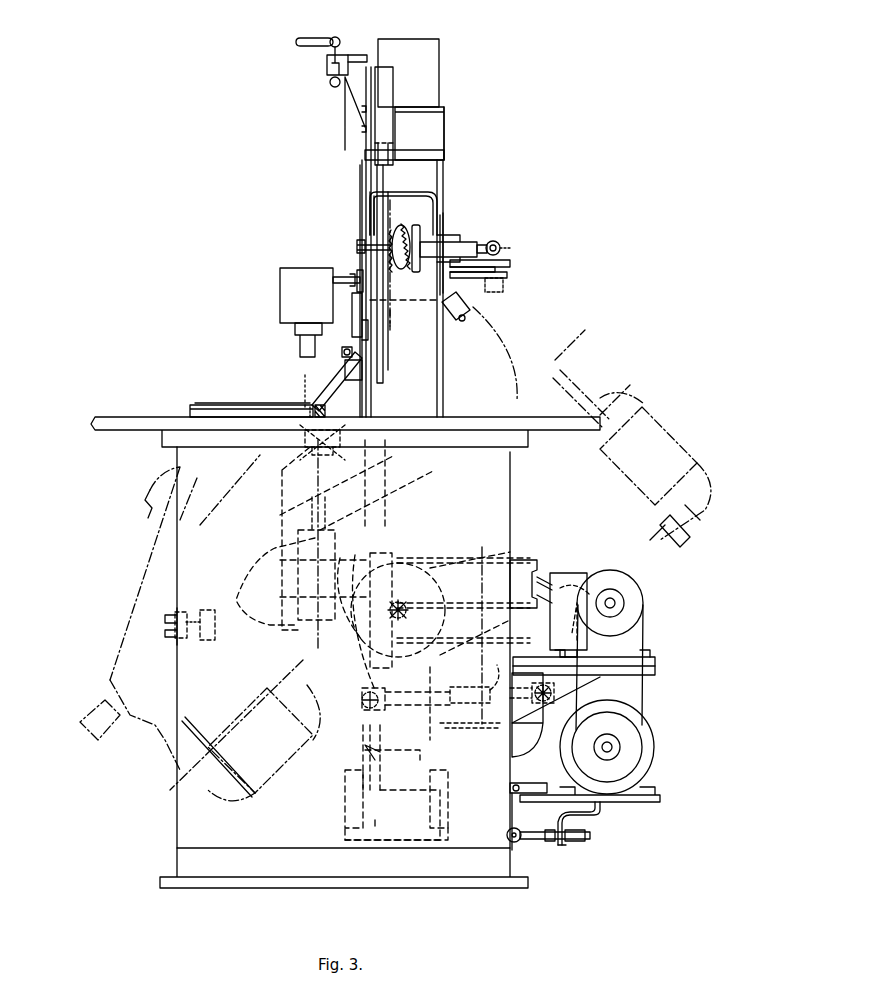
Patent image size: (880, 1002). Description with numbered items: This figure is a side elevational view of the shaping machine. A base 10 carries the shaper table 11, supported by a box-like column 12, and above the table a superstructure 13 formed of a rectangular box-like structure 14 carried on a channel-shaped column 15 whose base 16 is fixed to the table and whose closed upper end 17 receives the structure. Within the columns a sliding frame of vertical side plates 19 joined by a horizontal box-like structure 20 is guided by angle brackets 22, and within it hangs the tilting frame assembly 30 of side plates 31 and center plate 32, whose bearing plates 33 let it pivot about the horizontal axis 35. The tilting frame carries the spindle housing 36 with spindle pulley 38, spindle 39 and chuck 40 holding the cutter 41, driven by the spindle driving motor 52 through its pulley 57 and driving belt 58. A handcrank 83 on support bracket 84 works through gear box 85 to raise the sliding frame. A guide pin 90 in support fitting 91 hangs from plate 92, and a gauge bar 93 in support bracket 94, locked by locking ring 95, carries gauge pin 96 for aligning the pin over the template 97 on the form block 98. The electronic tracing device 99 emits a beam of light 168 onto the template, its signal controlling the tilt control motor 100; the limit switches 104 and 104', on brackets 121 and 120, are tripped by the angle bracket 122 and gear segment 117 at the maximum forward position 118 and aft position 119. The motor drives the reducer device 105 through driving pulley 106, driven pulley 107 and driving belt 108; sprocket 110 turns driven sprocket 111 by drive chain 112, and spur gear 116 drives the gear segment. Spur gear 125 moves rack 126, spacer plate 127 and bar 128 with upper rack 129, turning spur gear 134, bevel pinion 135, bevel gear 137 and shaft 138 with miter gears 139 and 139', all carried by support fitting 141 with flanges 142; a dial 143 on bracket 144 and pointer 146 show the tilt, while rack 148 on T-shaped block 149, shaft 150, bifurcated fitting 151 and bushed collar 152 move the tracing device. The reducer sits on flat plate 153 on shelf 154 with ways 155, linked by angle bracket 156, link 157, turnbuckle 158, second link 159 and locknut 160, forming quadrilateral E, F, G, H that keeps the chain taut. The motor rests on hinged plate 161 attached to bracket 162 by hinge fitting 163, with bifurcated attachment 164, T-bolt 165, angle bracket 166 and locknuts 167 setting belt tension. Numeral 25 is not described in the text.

The base 10 is at (240, 869).
The shaper table 11 is at (116, 418).
The column 12 is at (262, 837).
The superstructure 13 is at (458, 130).
The rectangular box-like structure 14 is at (424, 133).
The vertical channel-shaped column 15 is at (434, 363).
The base 16 is at (420, 380).
The closed upper end 17 is at (444, 156).
The vertical side plate 19 is at (362, 768).
The horizontal rectangular box-like structure 20 is at (398, 303).
The angle-shaped bracket 22 is at (345, 803).
The bottom plate 25 is at (345, 840).
The tilting frame assembly 30 is at (385, 762).
The side plate 31 is at (330, 672).
The vertically disposed center plate 32 is at (385, 796).
The bearing plate 33 is at (406, 493).
The horizontal axis 35 is at (312, 406).
The spindle housing 36 is at (282, 480).
The spindle pulley 38 is at (330, 528).
The spindle 39 is at (328, 498).
The chuck 40 is at (335, 448).
The cutter 41 is at (331, 405).
The spindle driving motor 52 is at (535, 744).
The spindle driving motor pulley 57 is at (530, 560).
The driving belt 58 is at (355, 565).
The handcrank 83 is at (313, 32).
The support bracket 84 is at (348, 107).
The gear box 85 is at (439, 61).
The guide pin 90 is at (328, 392).
The support fitting 91 is at (342, 348).
The plate 92 is at (364, 332).
The gauge bar 93 is at (383, 383).
The support bracket 94 is at (356, 312).
The locking ring 95 is at (348, 278).
The gauge pin 96 is at (354, 380).
The template 97 is at (256, 403).
The form block 98 is at (186, 412).
The electronic tracing device 99 is at (312, 296).
The tilt control motor 100 is at (654, 742).
The front limit switch 104 is at (204, 638).
The aft limit switch 104' is at (472, 320).
The reducer device 105 is at (568, 573).
The driving pulley 106 is at (620, 775).
The driven pulley 107 is at (624, 631).
The driving belt 108 is at (640, 700).
The sprocket 110 is at (574, 585).
The driven sprocket 111 is at (368, 645).
The drive chain 112 is at (549, 585).
The spur gear 116 is at (415, 602).
The gear segment 117 is at (245, 565).
The maximum forward position 118 is at (149, 557).
The maximum aft position 119 is at (516, 374).
The bracket 120 is at (405, 312).
The bracket 121 is at (172, 640).
The angle bracket 122 is at (215, 636).
The spur gear 125 is at (404, 617).
The rack 126 is at (393, 546).
The spacer plate 127 is at (380, 675).
The bar 128 is at (388, 373).
The upper rack 129 is at (393, 172).
The spur gear 134 is at (400, 222).
The bevel pinion 135 is at (425, 210).
The bevel gear 137 is at (420, 232).
The cylindrical shaft 138 is at (365, 246).
The miter gear 139 is at (518, 242).
The second miter gear 139' is at (531, 257).
The support fitting 141 is at (470, 238).
The flange 142 is at (455, 226).
The semi-circular dial 143 is at (362, 142).
The bracket 144 is at (420, 192).
The pointer 146 is at (360, 182).
The rack 148 is at (510, 266).
The T-shaped block 149 is at (500, 278).
The cylindrical shaft 150 is at (500, 292).
The bifurcated fitting 151 is at (495, 270).
The bushed collar 152 is at (357, 276).
The flat plate 153 is at (650, 655).
The bracketed shelf 154 is at (650, 675).
The longitudinal ways 155 is at (655, 666).
The angle bracket 156 is at (580, 694).
The link 157 is at (494, 672).
The turnbuckle 158 is at (484, 705).
The second link 159 is at (408, 705).
The locknut 160 is at (472, 688).
The hinged plate 161 is at (648, 802).
The bracket 162 is at (513, 812).
The hinge fitting 163 is at (535, 776).
The bifurcated attachment 164 is at (518, 845).
The T-bolt 165 is at (590, 836).
The angle bracket 166 is at (596, 815).
The locknut 167 is at (562, 845).
The beam of light 168 is at (305, 378).
The point E is at (550, 712).
The point F is at (365, 697).
The point G is at (378, 636).
The point H is at (574, 613).